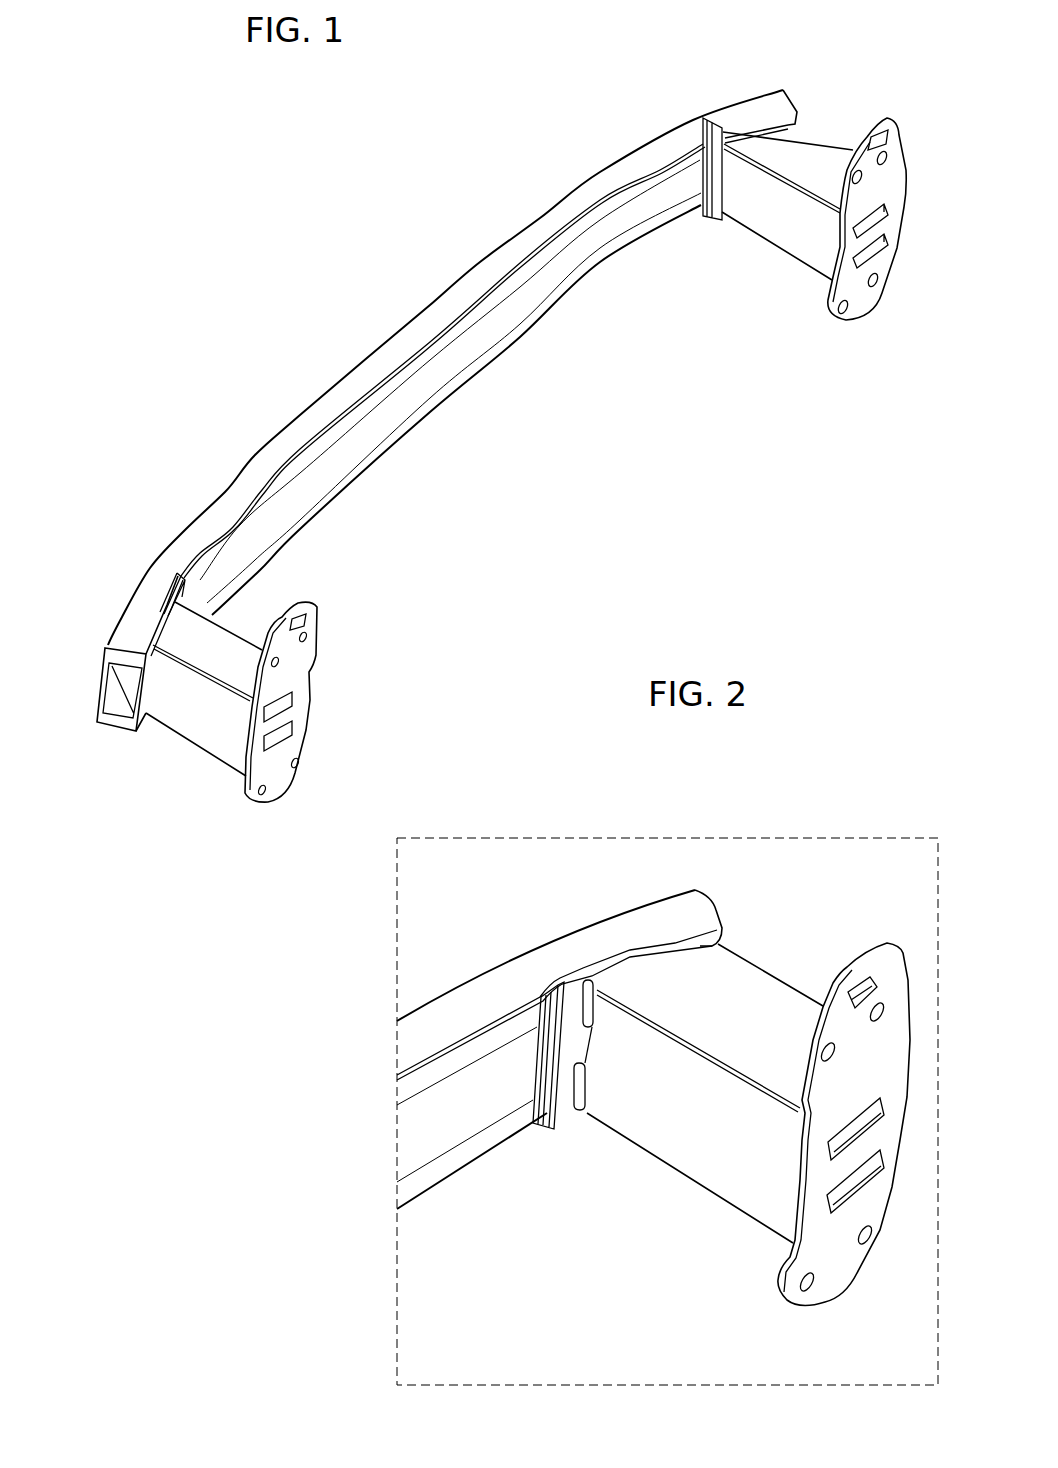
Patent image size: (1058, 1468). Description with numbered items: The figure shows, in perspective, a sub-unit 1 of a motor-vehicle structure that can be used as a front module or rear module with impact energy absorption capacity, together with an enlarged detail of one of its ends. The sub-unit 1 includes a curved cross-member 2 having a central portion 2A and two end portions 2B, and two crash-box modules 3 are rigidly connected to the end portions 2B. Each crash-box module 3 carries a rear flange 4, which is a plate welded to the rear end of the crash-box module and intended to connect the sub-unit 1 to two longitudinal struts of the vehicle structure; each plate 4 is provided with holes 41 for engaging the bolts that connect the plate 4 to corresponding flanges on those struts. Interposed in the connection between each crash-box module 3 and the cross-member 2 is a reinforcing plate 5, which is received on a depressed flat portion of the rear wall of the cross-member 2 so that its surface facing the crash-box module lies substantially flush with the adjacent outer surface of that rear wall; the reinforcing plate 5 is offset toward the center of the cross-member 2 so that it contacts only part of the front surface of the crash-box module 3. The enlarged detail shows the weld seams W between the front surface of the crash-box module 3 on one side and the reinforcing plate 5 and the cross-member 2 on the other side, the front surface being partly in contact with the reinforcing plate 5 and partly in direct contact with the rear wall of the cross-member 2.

In FIG. 1, the sub-unit of a motor-vehicle structure 1 is at (316, 300).
In FIG. 1, the cross-member 2 is at (558, 194).
In FIG. 2, the cross-member 2 is at (457, 983).
In FIG. 1, the central portion 2A is at (470, 294).
In FIG. 1, the end portions 2B is at (744, 96).
In FIG. 2, the end portions 2B is at (690, 900).
In FIG. 1, the crash-box module 3 is at (834, 132).
In FIG. 2, the crash-box module 3 is at (675, 1178).
In FIG. 1, the rear flange 4 is at (906, 236).
In FIG. 2, the rear flange 4 is at (912, 958).
In FIG. 2, the holes 41 is at (881, 1021).
In FIG. 1, the reinforcing plate 5 is at (707, 216).
In FIG. 2, the reinforcing plate 5 is at (555, 1045).
In FIG. 2, the weld seams W is at (586, 982).